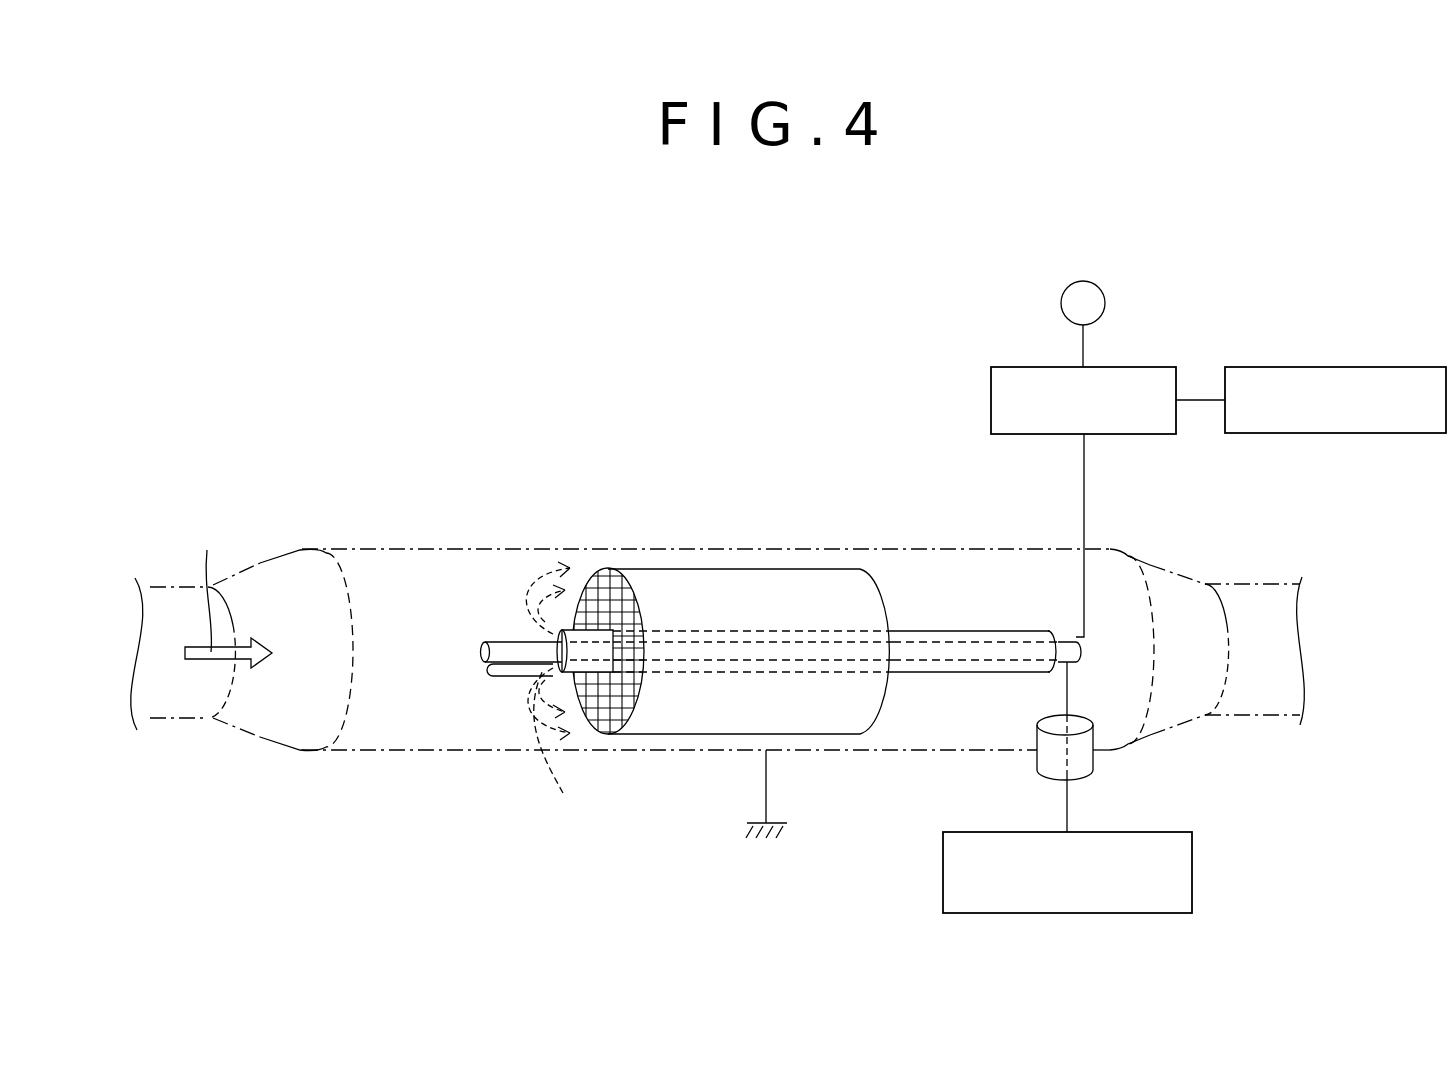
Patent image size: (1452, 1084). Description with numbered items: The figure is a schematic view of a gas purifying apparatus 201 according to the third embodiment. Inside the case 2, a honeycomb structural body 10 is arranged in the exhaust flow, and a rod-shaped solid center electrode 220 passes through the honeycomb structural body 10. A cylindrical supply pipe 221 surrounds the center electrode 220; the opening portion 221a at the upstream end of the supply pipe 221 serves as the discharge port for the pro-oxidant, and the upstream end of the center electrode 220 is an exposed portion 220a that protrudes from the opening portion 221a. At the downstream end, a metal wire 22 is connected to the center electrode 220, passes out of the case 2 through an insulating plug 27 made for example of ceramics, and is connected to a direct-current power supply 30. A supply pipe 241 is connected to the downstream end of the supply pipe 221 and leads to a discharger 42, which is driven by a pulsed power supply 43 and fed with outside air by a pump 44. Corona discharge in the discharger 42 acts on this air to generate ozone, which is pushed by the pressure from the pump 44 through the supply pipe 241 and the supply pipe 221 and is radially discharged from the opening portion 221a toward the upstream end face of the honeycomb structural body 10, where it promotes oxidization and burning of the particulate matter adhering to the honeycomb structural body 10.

The case 2 is at (977, 548).
The honeycomb structural body 10 is at (648, 585).
The metal wire 22 is at (1065, 693).
The insulating plug 27 is at (1083, 763).
The direct-current power supply 30 is at (1192, 867).
The discharger 42 is at (1128, 364).
The pulsed power supply 43 is at (1326, 364).
The pump 44 is at (1101, 288).
The gas purifying apparatus 201 is at (779, 494).
The center electrode 220 is at (485, 643).
The exposed portion 220a is at (540, 675).
The supply pipe 221 is at (932, 632).
The opening portion 221a is at (553, 640).
The supply pipe 241 is at (1086, 492).